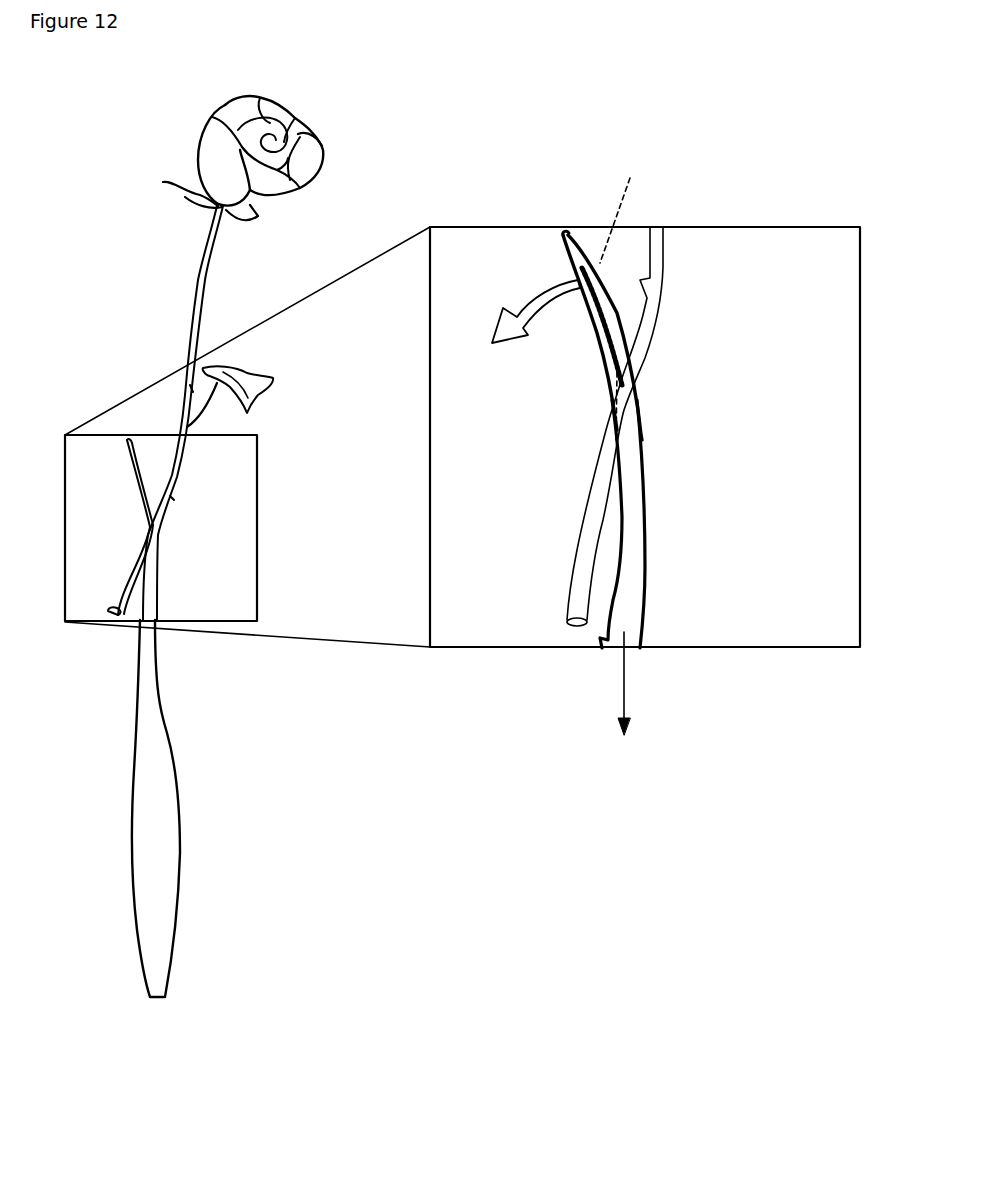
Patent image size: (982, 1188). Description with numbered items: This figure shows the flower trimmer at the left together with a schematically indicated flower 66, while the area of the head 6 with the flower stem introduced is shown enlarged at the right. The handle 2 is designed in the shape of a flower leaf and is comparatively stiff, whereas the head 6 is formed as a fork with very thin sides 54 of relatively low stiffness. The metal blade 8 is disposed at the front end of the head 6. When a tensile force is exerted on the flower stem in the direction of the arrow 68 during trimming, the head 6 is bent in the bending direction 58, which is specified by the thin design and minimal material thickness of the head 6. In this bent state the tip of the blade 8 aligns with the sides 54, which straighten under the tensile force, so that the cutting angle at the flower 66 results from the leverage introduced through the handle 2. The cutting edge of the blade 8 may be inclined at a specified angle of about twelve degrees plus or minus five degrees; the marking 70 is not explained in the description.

The handle 2 is at (178, 845).
The head 6 is at (632, 452).
The blade 8 is at (620, 293).
The sides 54 is at (638, 410).
The bending direction 58 is at (540, 282).
The flower 66 is at (195, 277).
The arrow 68 is at (622, 665).
The peeling direction 70 is at (627, 373).